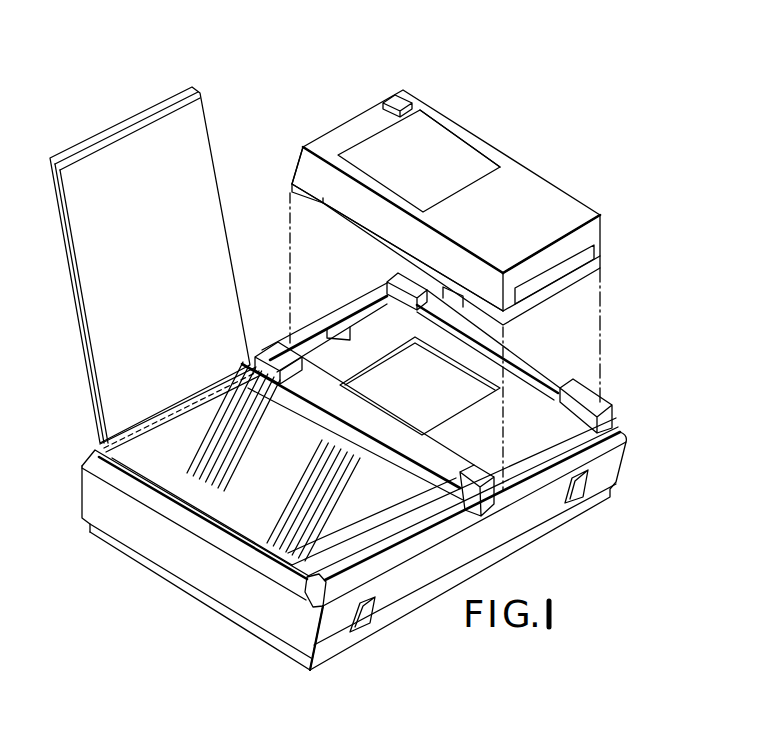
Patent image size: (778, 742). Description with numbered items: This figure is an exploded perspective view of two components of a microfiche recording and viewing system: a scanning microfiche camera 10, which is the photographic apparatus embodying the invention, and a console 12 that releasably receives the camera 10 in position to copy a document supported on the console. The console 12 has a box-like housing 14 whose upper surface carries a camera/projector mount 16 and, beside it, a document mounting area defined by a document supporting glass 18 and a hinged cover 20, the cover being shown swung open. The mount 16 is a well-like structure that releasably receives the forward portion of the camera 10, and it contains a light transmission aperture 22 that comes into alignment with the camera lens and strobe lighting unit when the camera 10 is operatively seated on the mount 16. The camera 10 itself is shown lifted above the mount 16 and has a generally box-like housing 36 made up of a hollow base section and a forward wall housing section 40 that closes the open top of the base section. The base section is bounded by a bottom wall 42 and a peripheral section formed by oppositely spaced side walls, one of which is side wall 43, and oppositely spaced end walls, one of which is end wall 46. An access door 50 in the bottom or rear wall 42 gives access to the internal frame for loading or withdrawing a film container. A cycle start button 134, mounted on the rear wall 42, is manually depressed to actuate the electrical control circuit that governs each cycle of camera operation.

The scanning microfiche camera 10 is at (577, 183).
The console 12 is at (215, 624).
The box-like housing 14 is at (309, 672).
The camera/projector mount 16 is at (528, 425).
The document supporting glass 18 is at (232, 488).
The hinged cover 20 is at (219, 172).
The light transmission aperture 22 is at (405, 393).
The box-like housing 36 is at (533, 170).
The forward wall housing section 40 is at (350, 222).
The bottom wall 42 is at (478, 146).
The side wall 43 is at (310, 172).
The end wall 46 is at (593, 224).
The access door 50 is at (440, 148).
The cycle start button 134 is at (396, 93).